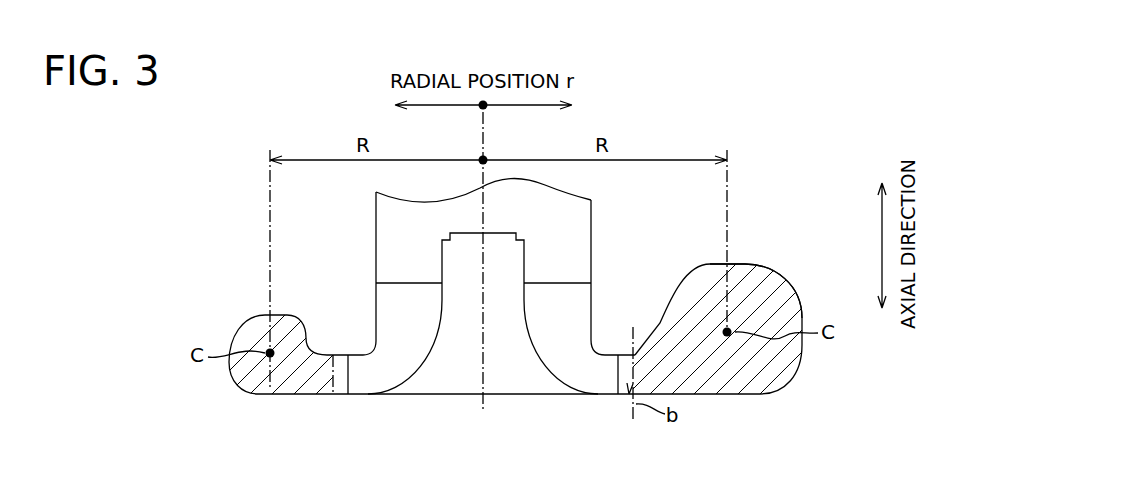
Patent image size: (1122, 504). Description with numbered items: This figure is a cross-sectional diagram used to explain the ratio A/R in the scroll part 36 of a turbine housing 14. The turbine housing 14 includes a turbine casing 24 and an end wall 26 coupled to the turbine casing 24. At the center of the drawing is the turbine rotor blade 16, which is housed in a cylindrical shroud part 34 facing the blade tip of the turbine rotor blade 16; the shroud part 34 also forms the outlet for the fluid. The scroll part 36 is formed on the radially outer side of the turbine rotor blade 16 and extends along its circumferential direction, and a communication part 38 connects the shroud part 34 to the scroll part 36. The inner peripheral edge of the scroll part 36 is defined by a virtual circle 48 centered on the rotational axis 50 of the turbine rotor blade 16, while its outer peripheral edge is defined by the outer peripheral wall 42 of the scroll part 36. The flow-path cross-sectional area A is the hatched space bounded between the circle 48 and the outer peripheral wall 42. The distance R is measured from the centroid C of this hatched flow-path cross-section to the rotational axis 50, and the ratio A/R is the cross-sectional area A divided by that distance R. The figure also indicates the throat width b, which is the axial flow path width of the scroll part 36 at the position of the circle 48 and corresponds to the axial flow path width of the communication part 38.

The turbine housing 14 is at (805, 220).
The turbine rotor blade 16 is at (523, 238).
The turbine casing 24 is at (805, 280).
The end wall 26 is at (542, 394).
The shroud part 34 is at (593, 228).
The scroll part 36 is at (753, 265).
The communication part 38 is at (628, 383).
The outer peripheral wall 42 is at (780, 273).
The virtual circle 48 is at (633, 353).
The rotational axis 50 is at (485, 133).